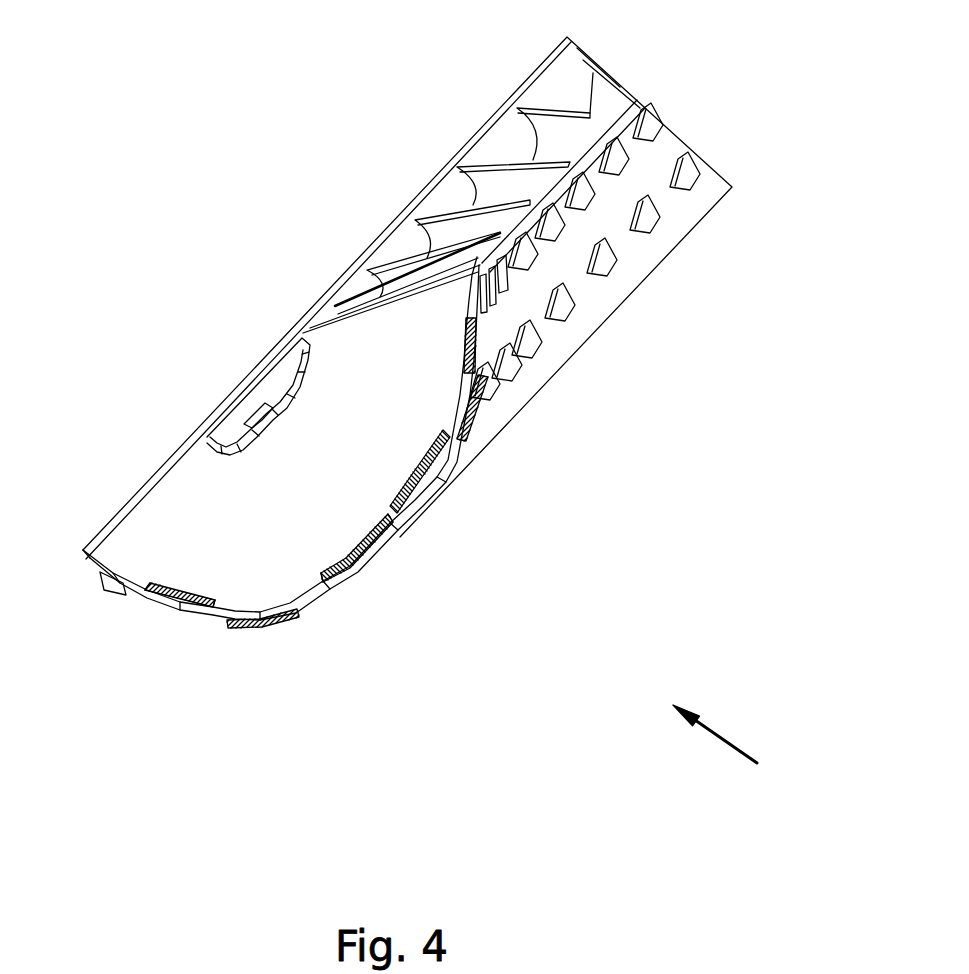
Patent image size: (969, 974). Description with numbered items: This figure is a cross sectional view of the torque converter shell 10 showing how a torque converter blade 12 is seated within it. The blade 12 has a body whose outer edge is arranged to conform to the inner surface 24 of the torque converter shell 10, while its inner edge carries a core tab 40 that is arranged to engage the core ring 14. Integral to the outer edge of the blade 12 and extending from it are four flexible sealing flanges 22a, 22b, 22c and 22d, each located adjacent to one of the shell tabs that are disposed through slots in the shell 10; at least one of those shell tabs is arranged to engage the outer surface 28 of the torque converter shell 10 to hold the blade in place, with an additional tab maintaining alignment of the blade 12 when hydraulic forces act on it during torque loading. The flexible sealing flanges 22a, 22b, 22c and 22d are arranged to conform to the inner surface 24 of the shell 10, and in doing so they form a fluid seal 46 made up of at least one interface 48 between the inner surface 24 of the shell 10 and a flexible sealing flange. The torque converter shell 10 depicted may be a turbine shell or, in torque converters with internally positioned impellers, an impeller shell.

The torque converter shell 10 is at (731, 746).
The torque converter blade 12 is at (340, 377).
The core ring 14 is at (243, 428).
The inner surface 24 is at (118, 575).
The outer surface 28 is at (642, 262).
The core tab 40 is at (236, 447).
The flexible sealing flange 22a is at (462, 363).
The flexible sealing flange 22b is at (418, 472).
The flexible sealing flange 22c is at (368, 553).
The flexible sealing flange 22d is at (177, 612).
The fluid seal 46 is at (347, 607).
The interface 48 is at (147, 595).